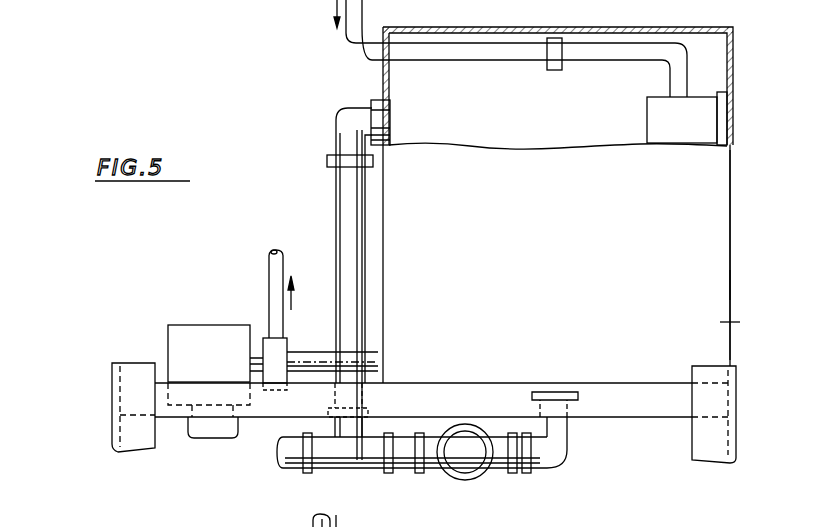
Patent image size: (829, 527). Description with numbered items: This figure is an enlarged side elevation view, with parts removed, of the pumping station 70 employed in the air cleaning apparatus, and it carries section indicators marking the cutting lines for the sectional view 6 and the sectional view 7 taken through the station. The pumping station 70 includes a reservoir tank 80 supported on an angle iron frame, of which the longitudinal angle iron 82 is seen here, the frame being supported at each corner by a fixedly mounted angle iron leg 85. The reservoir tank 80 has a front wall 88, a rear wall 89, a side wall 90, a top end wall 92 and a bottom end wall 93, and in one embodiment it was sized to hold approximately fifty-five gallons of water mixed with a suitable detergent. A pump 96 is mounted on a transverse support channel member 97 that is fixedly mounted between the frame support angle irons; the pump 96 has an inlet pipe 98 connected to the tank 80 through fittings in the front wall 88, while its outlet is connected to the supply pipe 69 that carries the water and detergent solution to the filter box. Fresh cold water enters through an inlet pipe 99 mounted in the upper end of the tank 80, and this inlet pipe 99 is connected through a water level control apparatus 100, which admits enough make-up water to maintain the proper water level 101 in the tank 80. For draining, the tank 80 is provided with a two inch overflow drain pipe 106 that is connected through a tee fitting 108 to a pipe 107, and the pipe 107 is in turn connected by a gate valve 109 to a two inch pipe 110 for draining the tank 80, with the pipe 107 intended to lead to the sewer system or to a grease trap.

The section line 6- 6 is at (298, 0).
The section line 7- 7 is at (198, 22).
The supply pipe 69 is at (269, 298).
The pumping station 70 is at (733, 286).
The reservoir tank 80 is at (707, 323).
The longitudinal angle iron 82 is at (660, 417).
The angle iron leg 85 is at (116, 436).
The front wall 88 is at (380, 228).
The rear wall 89 is at (732, 195).
The side wall 90 is at (710, 237).
The top end wall 92 is at (478, 27).
The bottom end wall 93 is at (628, 382).
The pump 96 is at (203, 346).
The transverse support channel member 97 is at (203, 440).
The inlet pipe 98 is at (378, 362).
The inlet pipe 99 is at (350, 52).
The water level control apparatus 100 is at (676, 122).
The water level 101 is at (508, 143).
The overflow drain pipe 106 is at (337, 188).
The pipe 107 is at (290, 450).
The tee fitting 108 is at (351, 440).
The gate valve 109 is at (465, 462).
The pipe 110 is at (566, 440).